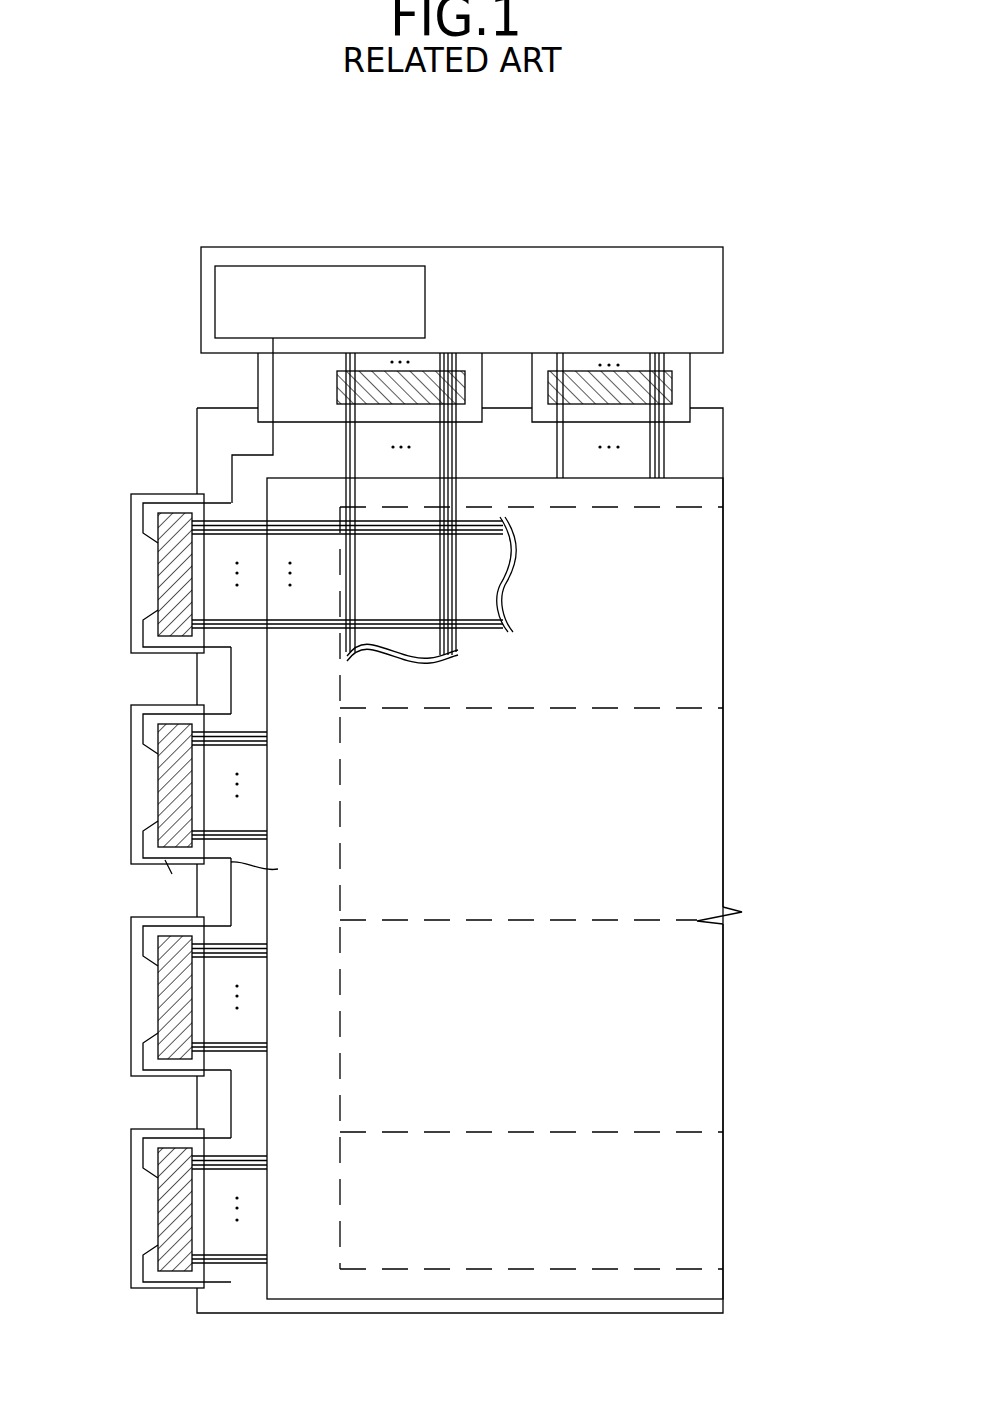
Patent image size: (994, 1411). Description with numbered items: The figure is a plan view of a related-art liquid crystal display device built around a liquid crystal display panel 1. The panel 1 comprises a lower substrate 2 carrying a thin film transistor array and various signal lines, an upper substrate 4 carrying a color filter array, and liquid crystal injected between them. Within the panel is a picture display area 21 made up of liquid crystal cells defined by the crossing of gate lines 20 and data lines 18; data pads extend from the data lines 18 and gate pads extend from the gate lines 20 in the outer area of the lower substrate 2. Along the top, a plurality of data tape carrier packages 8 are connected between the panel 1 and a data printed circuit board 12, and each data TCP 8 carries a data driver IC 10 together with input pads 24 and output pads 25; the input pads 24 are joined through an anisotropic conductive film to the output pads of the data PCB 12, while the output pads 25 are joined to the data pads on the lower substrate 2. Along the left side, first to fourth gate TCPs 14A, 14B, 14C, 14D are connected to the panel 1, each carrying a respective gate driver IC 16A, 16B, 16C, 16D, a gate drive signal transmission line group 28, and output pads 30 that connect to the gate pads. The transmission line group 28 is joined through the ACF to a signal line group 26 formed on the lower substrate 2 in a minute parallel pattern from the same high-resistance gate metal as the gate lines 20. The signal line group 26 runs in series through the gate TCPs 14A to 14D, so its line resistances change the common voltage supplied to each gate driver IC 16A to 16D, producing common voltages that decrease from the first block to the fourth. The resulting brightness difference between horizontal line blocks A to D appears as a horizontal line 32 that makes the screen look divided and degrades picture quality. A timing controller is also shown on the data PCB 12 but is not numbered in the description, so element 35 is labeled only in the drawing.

The liquid crystal display panel 1 is at (765, 659).
The lower substrate 2 is at (723, 446).
The upper substrate 4 is at (723, 502).
The data tape carrier package 8 is at (692, 382).
The data driver IC 10 is at (577, 371).
The data printed circuit board 12 is at (660, 258).
The first gate TCP 14A is at (142, 540).
The second gate TCP 14B is at (142, 751).
The third gate TCP 14C is at (142, 963).
The fourth gate TCP 14D is at (142, 1175).
The first gate driver IC 16A is at (158, 592).
The second gate driver IC 16B is at (158, 804).
The third gate driver IC 16C is at (158, 1016).
The fourth gate driver IC 16D is at (158, 1228).
The data line 18 is at (460, 647).
The gate line 20 is at (506, 520).
The picture display area 21 is at (537, 795).
The input pads 24 is at (451, 356).
The output pads 25 is at (456, 450).
The signal line group 26 is at (257, 453).
The gate drive signal transmission line group 28 is at (134, 506).
The output pads 30 is at (241, 522).
The horizontal line 32 is at (680, 708).
The timing controller 35 is at (317, 266).